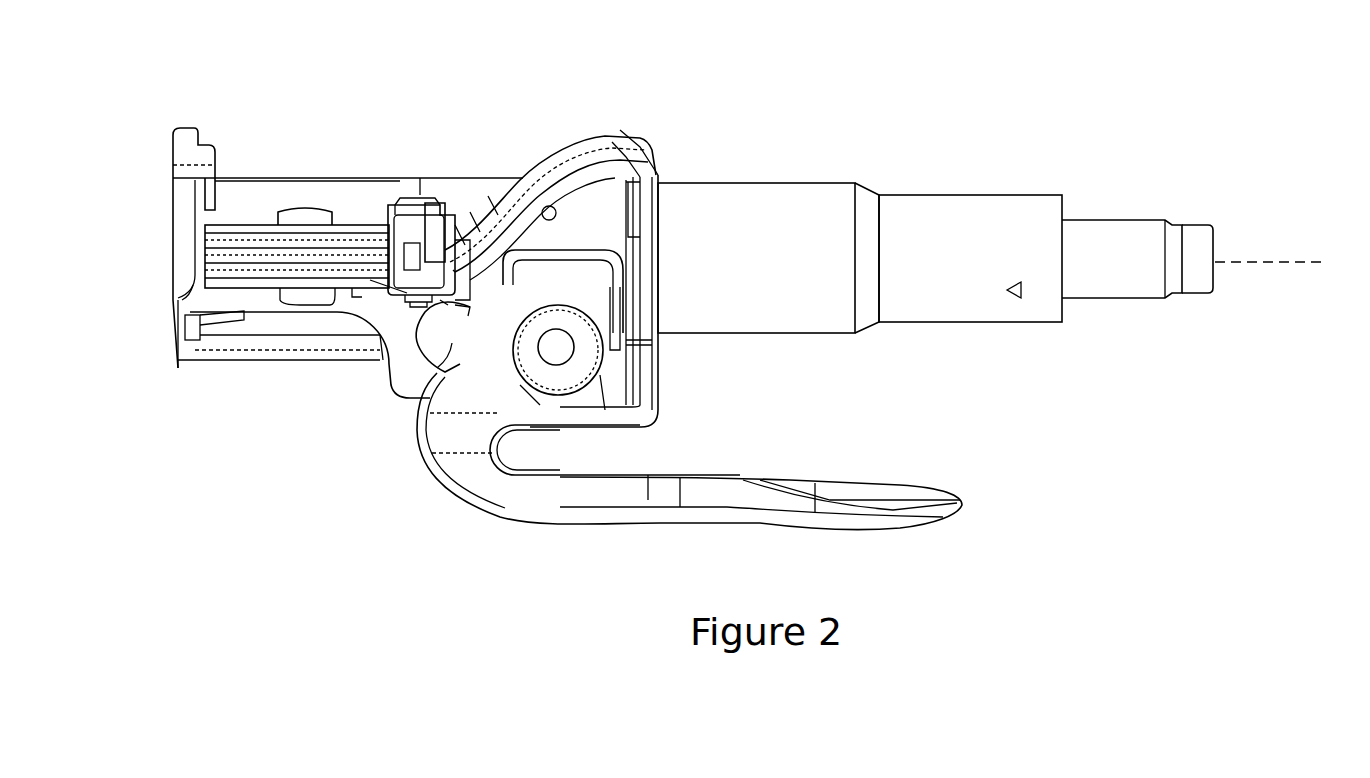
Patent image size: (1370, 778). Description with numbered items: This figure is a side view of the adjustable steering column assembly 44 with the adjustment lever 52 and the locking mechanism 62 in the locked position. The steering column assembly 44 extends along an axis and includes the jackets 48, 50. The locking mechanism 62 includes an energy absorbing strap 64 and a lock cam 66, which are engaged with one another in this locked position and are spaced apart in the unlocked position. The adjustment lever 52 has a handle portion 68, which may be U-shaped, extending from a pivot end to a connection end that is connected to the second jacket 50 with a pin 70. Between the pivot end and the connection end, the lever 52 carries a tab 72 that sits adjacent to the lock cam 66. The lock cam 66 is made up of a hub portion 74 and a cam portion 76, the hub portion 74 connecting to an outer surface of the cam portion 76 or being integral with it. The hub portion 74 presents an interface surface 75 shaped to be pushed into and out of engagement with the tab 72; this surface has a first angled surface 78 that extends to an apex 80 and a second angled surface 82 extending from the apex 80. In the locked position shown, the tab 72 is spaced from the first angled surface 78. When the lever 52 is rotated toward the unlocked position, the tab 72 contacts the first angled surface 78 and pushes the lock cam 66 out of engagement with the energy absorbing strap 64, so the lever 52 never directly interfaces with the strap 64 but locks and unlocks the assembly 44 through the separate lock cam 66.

The adjustable steering column assembly 44 is at (1092, 115).
The jacket 48 is at (829, 193).
The second jacket 50 is at (321, 178).
The adjustment lever 52 is at (963, 504).
The locking mechanism 62 is at (357, 370).
The energy absorbing strap 64 is at (470, 203).
The lock cam 66 is at (438, 197).
The handle portion 68 is at (587, 495).
The pin 70 is at (553, 352).
The tab 72 is at (452, 345).
The hub portion 74 is at (461, 198).
The interface surface 75 is at (444, 298).
The cam portion 76 is at (476, 233).
The first angled surface 78 is at (453, 270).
The apex 80 is at (548, 208).
The second angled surface 82 is at (520, 218).